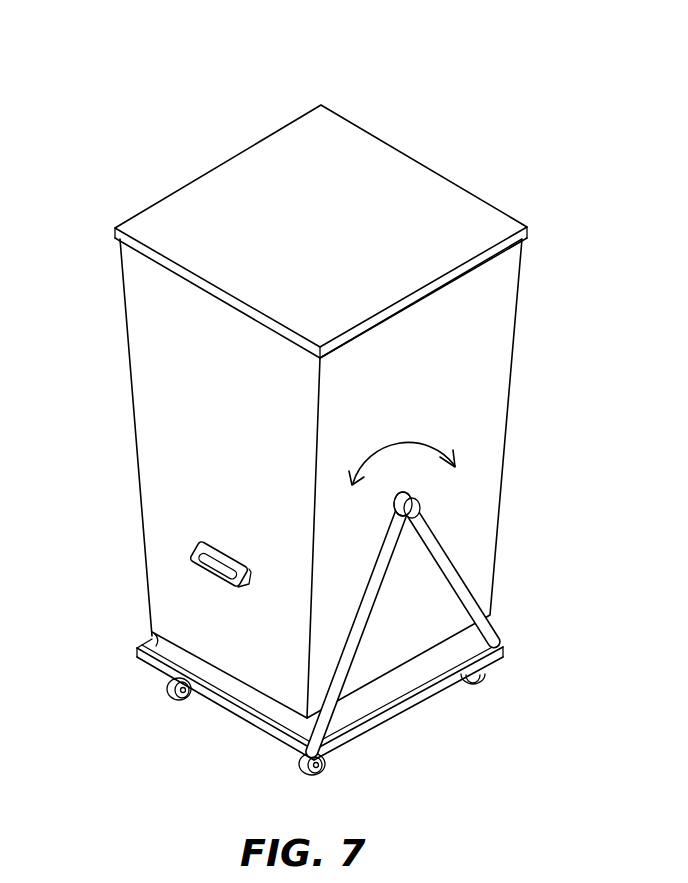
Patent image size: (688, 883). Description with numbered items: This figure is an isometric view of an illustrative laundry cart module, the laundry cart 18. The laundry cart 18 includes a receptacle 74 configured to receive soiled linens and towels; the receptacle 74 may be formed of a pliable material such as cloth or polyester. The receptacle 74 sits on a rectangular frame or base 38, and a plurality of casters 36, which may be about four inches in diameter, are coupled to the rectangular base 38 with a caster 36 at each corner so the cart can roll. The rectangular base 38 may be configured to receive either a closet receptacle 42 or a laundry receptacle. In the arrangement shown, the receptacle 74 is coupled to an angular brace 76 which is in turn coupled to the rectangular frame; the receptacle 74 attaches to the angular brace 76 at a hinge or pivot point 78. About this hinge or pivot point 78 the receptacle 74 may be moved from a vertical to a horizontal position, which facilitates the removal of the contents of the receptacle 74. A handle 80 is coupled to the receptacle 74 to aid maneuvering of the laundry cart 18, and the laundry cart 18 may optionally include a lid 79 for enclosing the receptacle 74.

The laundry cart 18 is at (312, 412).
The closet receptacle 42 is at (312, 411).
The lid 79 is at (420, 197).
The receptacle 74 is at (447, 333).
The hinge or pivot point 78 is at (419, 497).
The handle 80 is at (190, 562).
The casters 36 is at (163, 684).
The rectangular frame or base 38 is at (222, 683).
The angular brace 76 is at (357, 677).